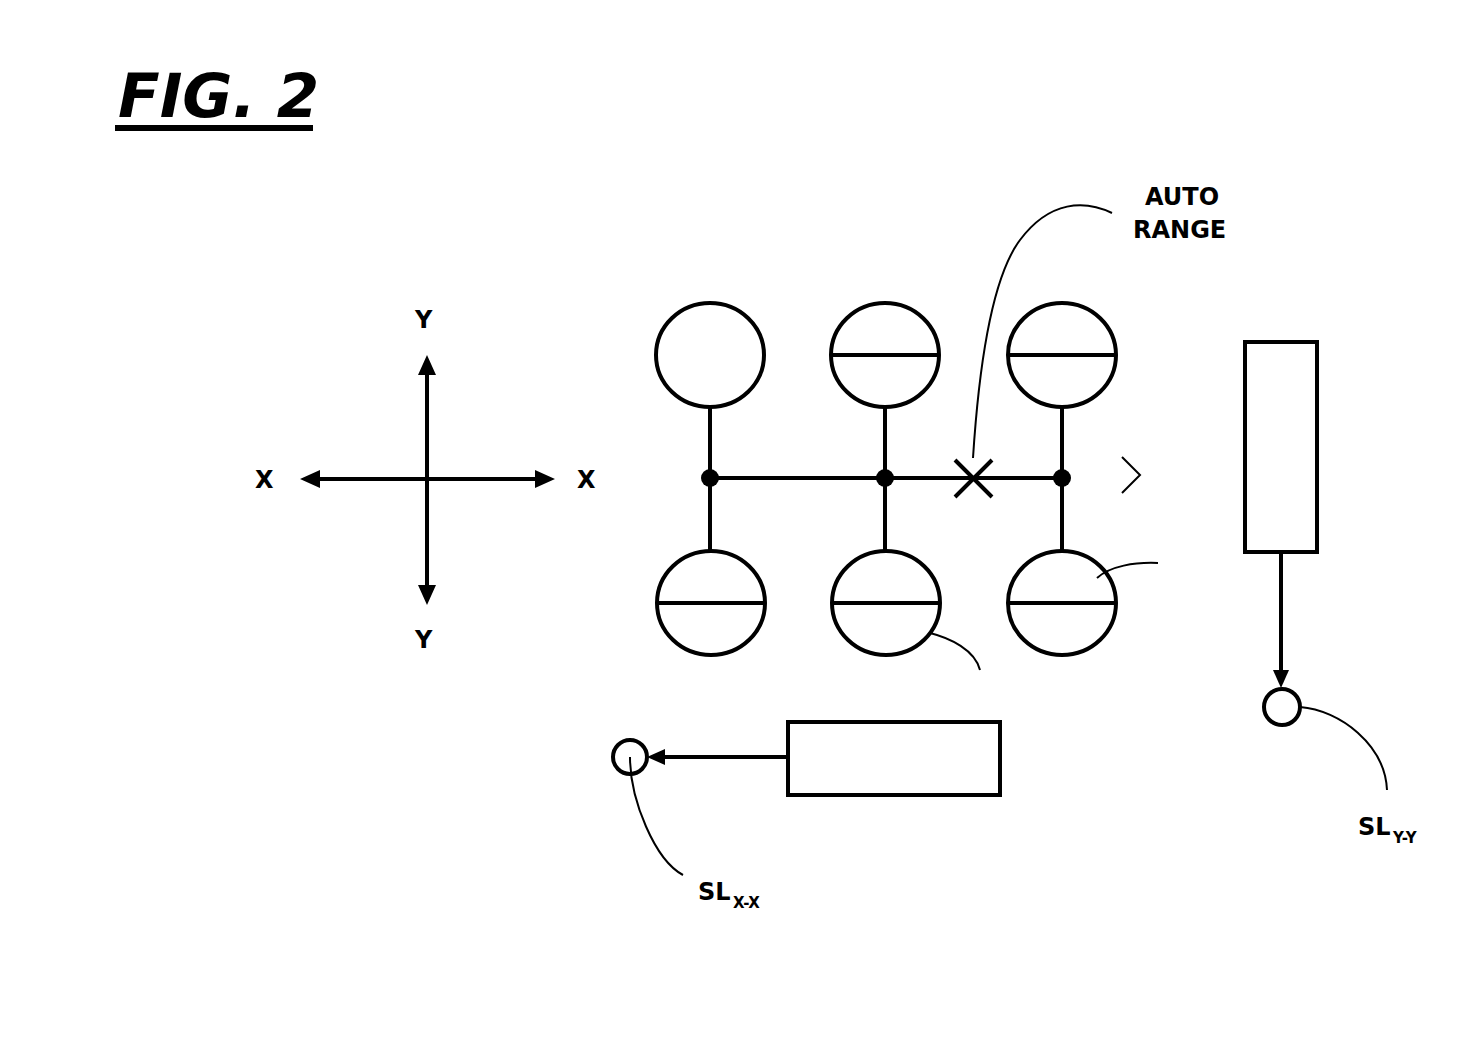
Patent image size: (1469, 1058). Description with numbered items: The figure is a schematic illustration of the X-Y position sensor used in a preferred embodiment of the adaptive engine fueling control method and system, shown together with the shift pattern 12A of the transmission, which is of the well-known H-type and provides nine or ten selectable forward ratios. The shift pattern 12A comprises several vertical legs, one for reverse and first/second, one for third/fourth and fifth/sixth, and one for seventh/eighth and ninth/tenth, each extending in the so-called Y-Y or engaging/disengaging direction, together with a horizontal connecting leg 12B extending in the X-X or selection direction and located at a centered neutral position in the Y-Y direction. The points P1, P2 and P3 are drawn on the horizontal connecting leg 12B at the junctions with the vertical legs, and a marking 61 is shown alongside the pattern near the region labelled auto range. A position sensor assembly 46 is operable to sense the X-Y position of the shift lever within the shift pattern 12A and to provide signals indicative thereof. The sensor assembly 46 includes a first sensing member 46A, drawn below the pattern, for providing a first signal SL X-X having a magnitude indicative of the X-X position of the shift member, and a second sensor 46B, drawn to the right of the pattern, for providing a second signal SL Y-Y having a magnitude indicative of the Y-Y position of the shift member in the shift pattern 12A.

The shift pattern 12A is at (790, 310).
The horizontal connecting leg 12B is at (770, 480).
The first position P1 is at (712, 470).
The second position P2 is at (883, 485).
The third position P3 is at (1060, 487).
The position sensor assembly 46 is at (1316, 242).
The first sensing member 46A is at (963, 757).
The second sensor 46B is at (1297, 518).
The auto range indication 61 is at (1156, 475).